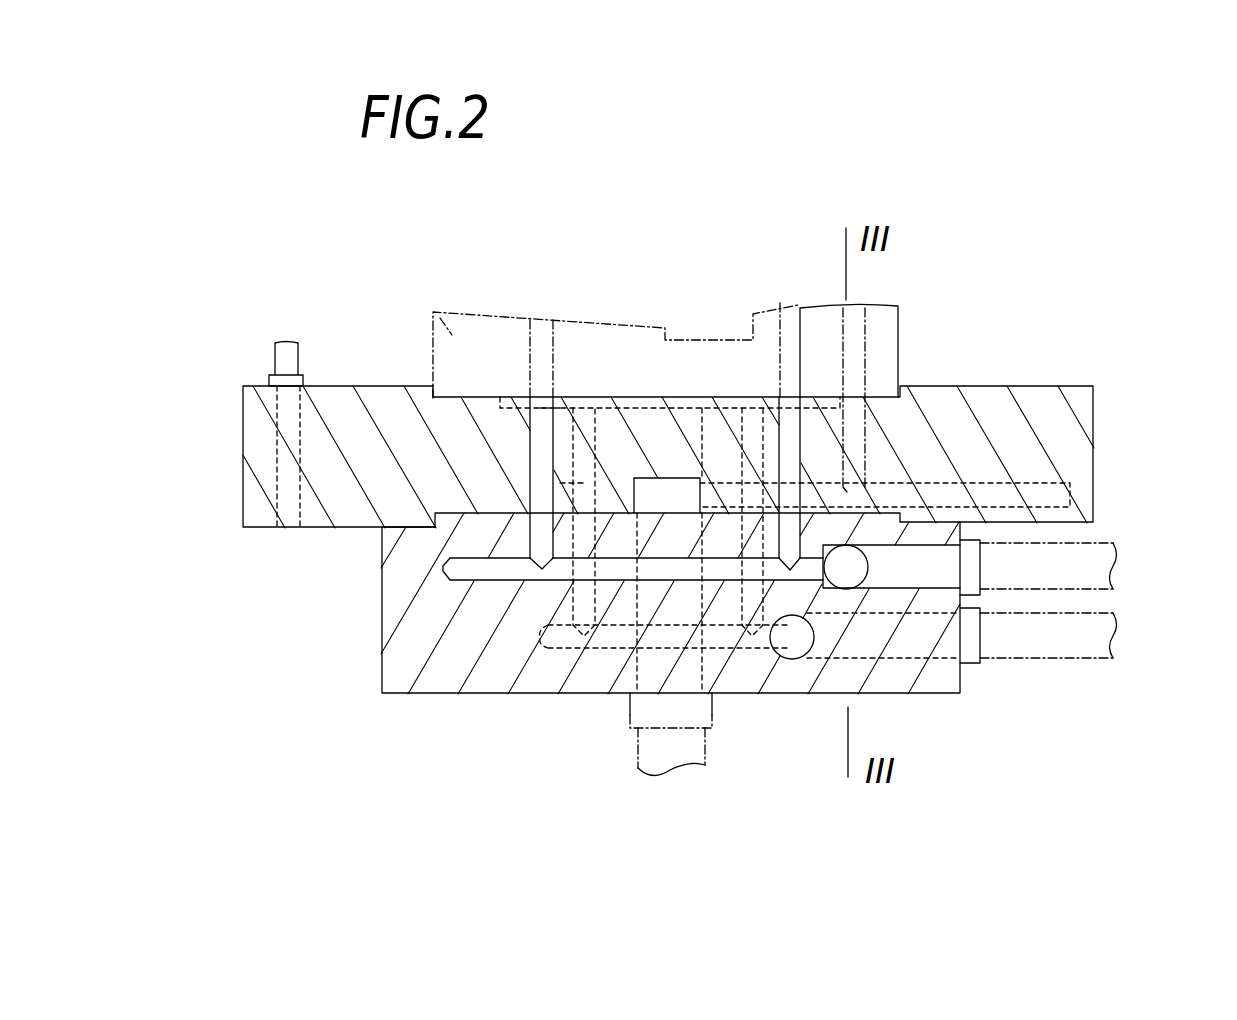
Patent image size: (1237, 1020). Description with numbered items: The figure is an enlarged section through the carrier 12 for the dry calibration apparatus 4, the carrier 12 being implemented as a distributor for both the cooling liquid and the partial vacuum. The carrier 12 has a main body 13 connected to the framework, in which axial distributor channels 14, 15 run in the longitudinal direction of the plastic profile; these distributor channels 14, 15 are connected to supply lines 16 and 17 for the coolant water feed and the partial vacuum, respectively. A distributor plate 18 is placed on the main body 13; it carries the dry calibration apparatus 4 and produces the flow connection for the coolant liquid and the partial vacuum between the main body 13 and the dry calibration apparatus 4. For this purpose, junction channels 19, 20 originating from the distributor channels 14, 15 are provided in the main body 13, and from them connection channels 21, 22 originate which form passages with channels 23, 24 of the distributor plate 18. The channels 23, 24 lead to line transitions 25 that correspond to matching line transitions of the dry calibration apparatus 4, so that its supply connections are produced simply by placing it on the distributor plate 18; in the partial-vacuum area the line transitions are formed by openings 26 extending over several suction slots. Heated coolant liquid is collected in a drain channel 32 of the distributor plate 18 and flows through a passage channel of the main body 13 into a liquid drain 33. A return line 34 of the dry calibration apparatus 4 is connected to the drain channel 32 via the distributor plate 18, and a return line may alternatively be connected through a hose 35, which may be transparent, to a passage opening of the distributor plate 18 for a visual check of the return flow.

The dry calibration apparatus 4 is at (432, 312).
The carrier 12 is at (322, 665).
The main body 13 is at (433, 642).
The distributor channel 14 is at (845, 568).
The distributor channel 15 is at (792, 637).
The supply line 16 is at (1097, 568).
The supply line 17 is at (1103, 637).
The distributor plate 18 is at (355, 410).
The junction channel 19 is at (485, 570).
The junction channel 20 is at (737, 694).
The connection channel 21 is at (542, 532).
The connection channel 22 is at (560, 483).
The channel 23 is at (543, 445).
The channel 24 is at (670, 425).
The line transition 25 is at (542, 397).
The opening 26 is at (692, 405).
The drain channel 32 is at (650, 500).
The liquid drain 33 is at (670, 750).
The return line 34 is at (853, 365).
The hose 35 is at (285, 363).